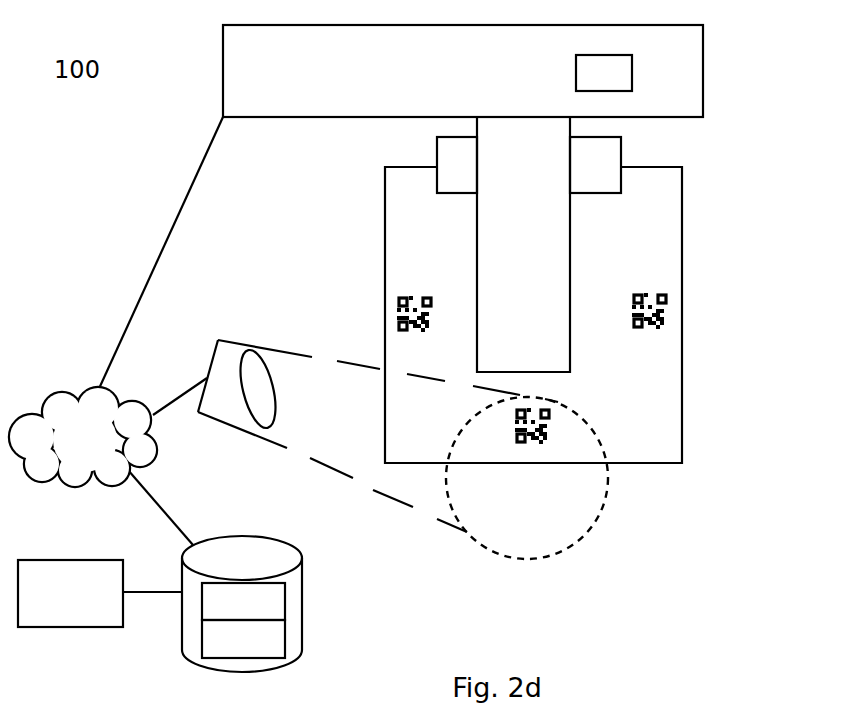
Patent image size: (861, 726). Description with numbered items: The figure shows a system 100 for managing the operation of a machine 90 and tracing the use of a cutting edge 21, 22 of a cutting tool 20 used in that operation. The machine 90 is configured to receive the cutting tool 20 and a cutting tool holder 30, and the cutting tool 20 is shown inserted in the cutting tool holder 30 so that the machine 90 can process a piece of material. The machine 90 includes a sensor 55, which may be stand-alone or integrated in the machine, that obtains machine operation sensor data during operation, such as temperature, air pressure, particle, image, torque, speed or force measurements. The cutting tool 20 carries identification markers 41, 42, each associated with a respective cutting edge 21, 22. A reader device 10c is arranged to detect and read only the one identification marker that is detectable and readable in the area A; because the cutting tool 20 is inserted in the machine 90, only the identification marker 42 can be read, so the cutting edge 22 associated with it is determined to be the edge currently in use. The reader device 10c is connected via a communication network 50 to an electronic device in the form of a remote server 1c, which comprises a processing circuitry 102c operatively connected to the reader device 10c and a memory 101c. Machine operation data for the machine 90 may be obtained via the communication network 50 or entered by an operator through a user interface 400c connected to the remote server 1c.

The system 100 is at (128, 92).
The machine 90 is at (463, 71).
The sensor 55 is at (604, 73).
The cutting tool 20 is at (608, 226).
The cutting edge 21 is at (696, 242).
The cutting tool holder 30 is at (529, 244).
The identification marker 41 is at (658, 344).
The identification marker 42 is at (566, 439).
The cutting edge 22 is at (548, 474).
The area A is at (527, 478).
The reader device 10c is at (222, 437).
The communication network 50 is at (83, 437).
The remote server 1c is at (242, 604).
The processing circuitry 102c is at (243, 601).
The memory 101c is at (243, 639).
The user interface 400c is at (70, 593).